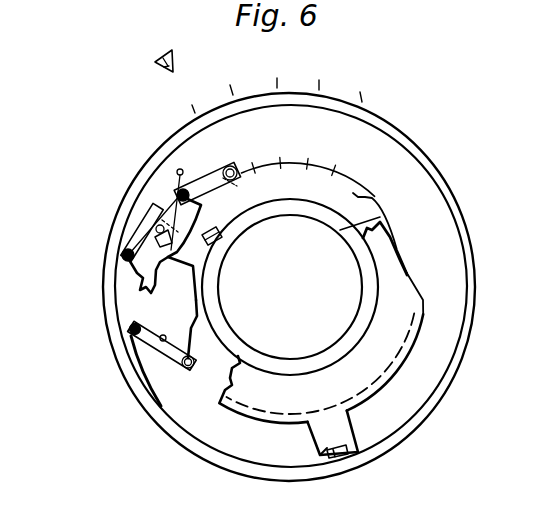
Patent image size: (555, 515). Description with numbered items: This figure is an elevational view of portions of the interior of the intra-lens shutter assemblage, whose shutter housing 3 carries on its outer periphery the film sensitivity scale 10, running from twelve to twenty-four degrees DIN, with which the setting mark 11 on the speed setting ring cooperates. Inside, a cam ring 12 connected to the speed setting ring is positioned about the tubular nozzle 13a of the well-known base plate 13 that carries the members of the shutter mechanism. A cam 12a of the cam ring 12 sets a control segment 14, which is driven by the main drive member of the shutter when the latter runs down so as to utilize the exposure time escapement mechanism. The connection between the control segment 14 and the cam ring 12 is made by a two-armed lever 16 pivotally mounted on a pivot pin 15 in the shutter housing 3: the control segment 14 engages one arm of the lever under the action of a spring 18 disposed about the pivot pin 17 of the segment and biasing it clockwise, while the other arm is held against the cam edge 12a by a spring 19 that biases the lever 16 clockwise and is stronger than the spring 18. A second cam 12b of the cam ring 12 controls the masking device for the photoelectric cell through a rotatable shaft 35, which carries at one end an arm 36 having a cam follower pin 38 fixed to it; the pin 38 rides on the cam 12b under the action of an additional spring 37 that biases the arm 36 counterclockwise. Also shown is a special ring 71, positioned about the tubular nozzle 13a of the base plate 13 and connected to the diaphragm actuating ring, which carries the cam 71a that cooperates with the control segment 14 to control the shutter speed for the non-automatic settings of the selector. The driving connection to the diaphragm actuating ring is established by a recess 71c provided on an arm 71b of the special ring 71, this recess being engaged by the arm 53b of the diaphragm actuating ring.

The shutter housing 3 is at (467, 348).
The film sensitivity scale 10 is at (288, 70).
The setting mark 11 is at (178, 56).
The cam ring 12 is at (330, 197).
The cam 12a is at (297, 167).
The cam 12b is at (193, 330).
The base plate 13 is at (437, 230).
The tubular nozzle 13a is at (380, 217).
The control segment 14 is at (137, 278).
The pivot pin 15 is at (180, 194).
The two-armed lever 16 is at (203, 178).
The pivot pin 17 is at (123, 257).
The spring 18 is at (120, 246).
The spring 19 is at (208, 188).
The rotatable shaft 35 is at (131, 328).
The arm 36 is at (157, 350).
The spring 37 is at (128, 340).
The cam follower pin 38 is at (186, 368).
The arm 53b is at (340, 453).
The special ring 71 is at (388, 306).
The cam 71a is at (410, 273).
The arm 71b is at (337, 428).
The recess 71c is at (327, 452).